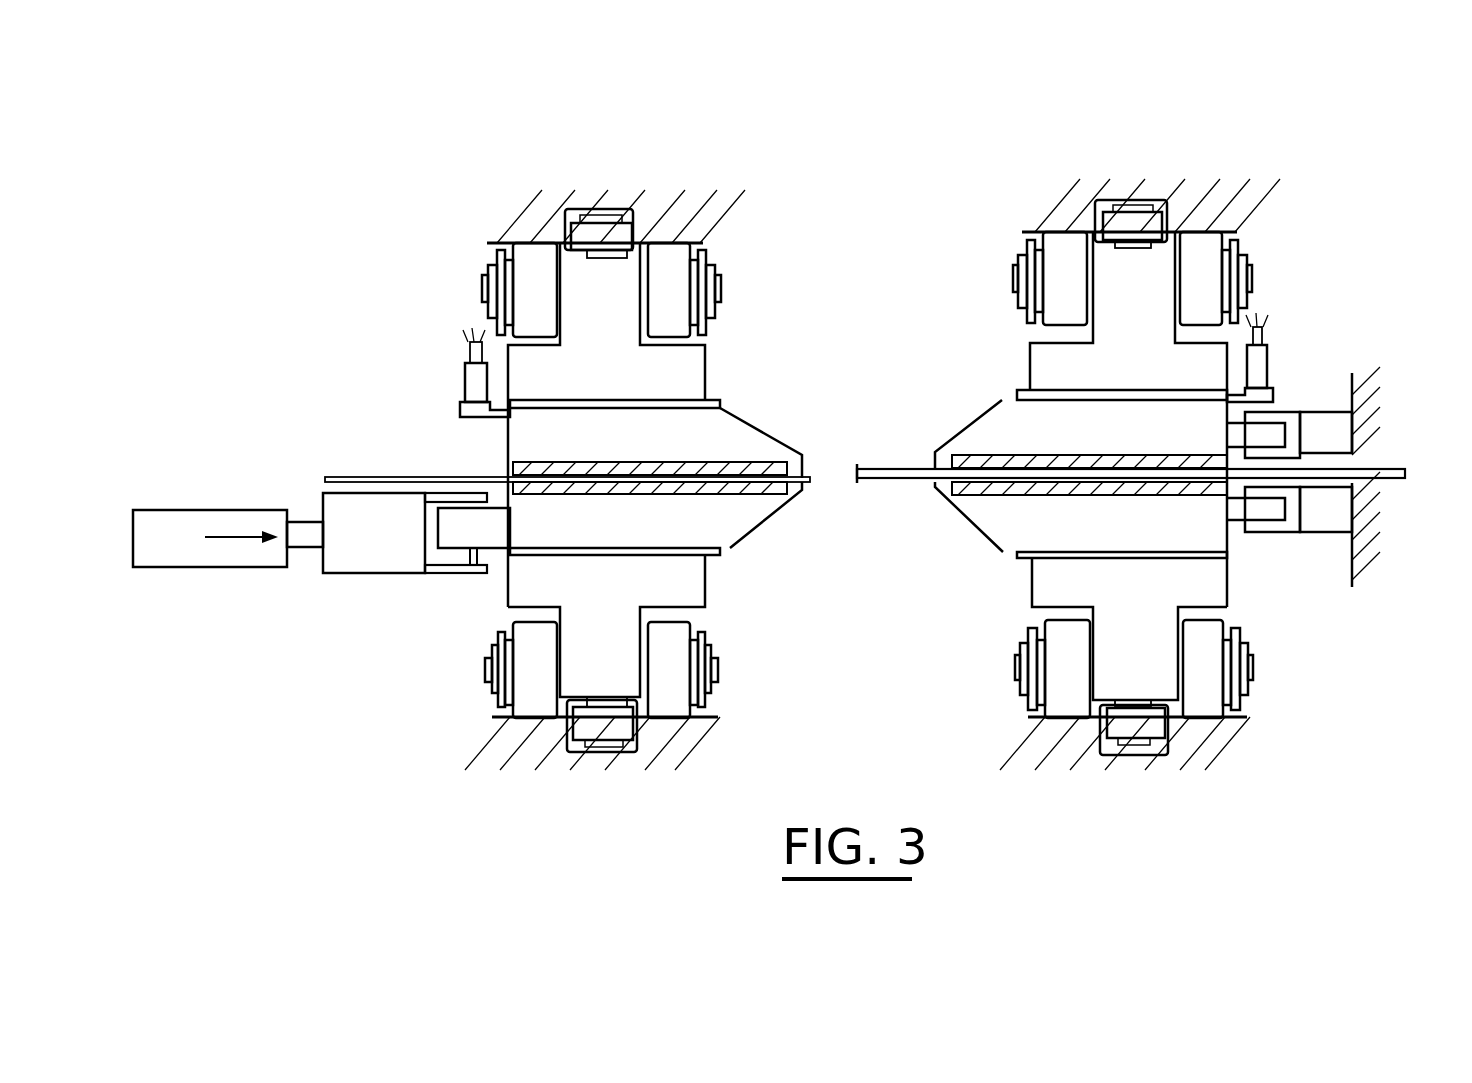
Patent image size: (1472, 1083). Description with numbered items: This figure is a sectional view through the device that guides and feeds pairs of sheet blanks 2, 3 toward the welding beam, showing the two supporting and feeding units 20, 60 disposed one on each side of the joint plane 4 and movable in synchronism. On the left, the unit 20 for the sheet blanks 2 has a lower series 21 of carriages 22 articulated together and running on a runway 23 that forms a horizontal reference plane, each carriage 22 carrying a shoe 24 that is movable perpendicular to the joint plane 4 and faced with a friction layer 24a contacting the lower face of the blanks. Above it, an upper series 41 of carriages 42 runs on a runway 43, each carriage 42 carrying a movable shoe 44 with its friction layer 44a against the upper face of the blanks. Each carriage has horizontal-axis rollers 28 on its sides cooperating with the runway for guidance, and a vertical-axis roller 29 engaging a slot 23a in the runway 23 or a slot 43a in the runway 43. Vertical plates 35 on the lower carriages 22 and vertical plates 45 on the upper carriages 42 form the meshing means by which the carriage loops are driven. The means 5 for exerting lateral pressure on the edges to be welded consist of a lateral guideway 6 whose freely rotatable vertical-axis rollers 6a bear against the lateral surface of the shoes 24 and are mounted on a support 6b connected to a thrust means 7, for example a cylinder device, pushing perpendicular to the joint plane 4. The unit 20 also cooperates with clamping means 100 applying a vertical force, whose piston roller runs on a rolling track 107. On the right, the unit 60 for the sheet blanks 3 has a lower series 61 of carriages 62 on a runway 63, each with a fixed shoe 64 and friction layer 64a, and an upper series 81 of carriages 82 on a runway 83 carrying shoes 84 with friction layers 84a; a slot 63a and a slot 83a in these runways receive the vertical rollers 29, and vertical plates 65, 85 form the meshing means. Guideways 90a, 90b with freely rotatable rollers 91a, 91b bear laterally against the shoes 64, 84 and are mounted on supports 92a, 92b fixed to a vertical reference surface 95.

The sheet blanks 2 is at (807, 482).
The sheet blanks 3 is at (880, 488).
The joint plane 4 is at (857, 468).
The means for exerting lateral pressure 5 is at (313, 560).
The lateral guideway 6 is at (338, 565).
The rollers 6a is at (453, 535).
The support 6b is at (432, 573).
The thrust means 7 is at (158, 558).
The unit for supporting and feeding the sheet blanks 20 is at (863, 468).
The lower series of carriages 21 is at (781, 568).
The carriage 22 is at (523, 600).
The runway 23 is at (500, 735).
The slot 23a is at (567, 745).
The shoe 24 is at (730, 547).
The layer 24a is at (780, 494).
The rollers 28 is at (530, 252).
The roller 29 is at (636, 218).
The vertical plates 35 is at (490, 660).
The upper series of carriages 41 is at (797, 398).
The carriage 42 is at (685, 370).
The runway 43 is at (530, 195).
The slot 43a is at (573, 208).
The shoe 44 is at (703, 440).
The layer 44a is at (758, 467).
The vertical plates 45 is at (490, 275).
The unit for supporting and feeding the sheet blanks 60 is at (1171, 468).
The lower series of carriages 61 is at (957, 607).
The carriage 62 is at (1235, 605).
The runway 63 is at (1255, 740).
The lower cam block 63a is at (1115, 735).
The shoe 64 is at (990, 555).
The layer 64a is at (985, 510).
The vertical plates 65 is at (1020, 700).
The upper series of carriages 81 is at (967, 329).
The carriage 82 is at (1035, 355).
The runway 83 is at (1037, 200).
The upper cam block 83a is at (1107, 198).
The shoe 84 is at (980, 418).
The layer 84a is at (990, 445).
The vertical plates 85 is at (1022, 242).
The guideway 90a is at (1350, 554).
The guideway 90b is at (1350, 393).
The rollers 91a is at (1245, 500).
The rollers 91b is at (1270, 435).
The support 92a is at (1325, 520).
The support 92b is at (1325, 440).
The vertical reference surface 95 is at (1365, 400).
The means for clamping the sheet blanks 100 is at (473, 385).
The rolling track 107 is at (472, 338).